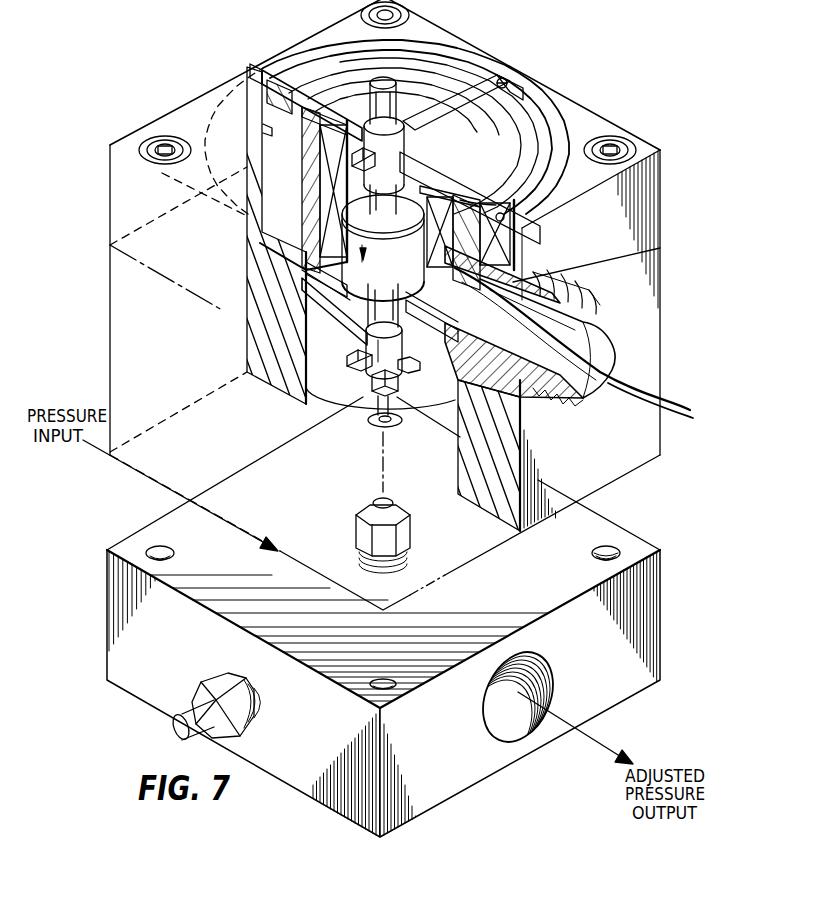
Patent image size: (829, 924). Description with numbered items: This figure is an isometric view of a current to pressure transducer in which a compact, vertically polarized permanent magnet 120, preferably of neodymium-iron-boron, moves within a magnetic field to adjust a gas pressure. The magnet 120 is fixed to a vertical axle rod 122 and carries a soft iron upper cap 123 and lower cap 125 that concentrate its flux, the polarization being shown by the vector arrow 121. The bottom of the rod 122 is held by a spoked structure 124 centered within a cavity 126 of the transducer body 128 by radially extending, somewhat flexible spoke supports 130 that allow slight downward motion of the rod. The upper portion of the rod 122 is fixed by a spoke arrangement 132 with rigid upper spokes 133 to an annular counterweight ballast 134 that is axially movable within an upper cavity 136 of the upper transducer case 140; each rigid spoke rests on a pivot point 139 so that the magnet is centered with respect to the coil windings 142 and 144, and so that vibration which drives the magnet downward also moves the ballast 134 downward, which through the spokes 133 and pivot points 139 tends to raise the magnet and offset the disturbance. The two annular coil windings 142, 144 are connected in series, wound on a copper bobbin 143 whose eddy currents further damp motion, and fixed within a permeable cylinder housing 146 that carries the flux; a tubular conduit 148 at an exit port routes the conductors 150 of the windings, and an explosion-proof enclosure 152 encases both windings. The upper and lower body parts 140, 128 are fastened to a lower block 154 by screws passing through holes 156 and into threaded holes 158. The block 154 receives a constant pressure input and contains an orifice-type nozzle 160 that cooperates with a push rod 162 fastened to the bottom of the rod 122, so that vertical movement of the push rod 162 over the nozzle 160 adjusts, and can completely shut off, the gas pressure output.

The permanent magnet 120 is at (400, 276).
The vector arrow 121 is at (360, 257).
The axle rod 122 is at (366, 92).
The upper cap 123 is at (413, 200).
The spoked structure 124 is at (360, 352).
The lower cap 125 is at (305, 298).
The cavity 126 is at (320, 393).
The transducer body 128 is at (659, 312).
The spoke supports 130 is at (364, 343).
The spoke arrangement 132 is at (421, 112).
The upper spokes 133 is at (293, 63).
The annular counterweight ballast 134 is at (268, 98).
The upper cavity 136 is at (267, 132).
The pivot point 139 is at (504, 78).
The upper transducer case 140 is at (359, 305).
The coil winding 142 is at (320, 173).
The bobbin 143 is at (460, 312).
The coil winding 144 is at (330, 228).
The cylinder housing 146 is at (320, 199).
The tubular conduit 148 is at (613, 347).
The conductors 150 is at (611, 392).
The explosion-proof enclosure 152 is at (463, 137).
The lower block 154 is at (655, 630).
The holes 156 is at (618, 142).
The threaded holes 158 is at (603, 543).
The orifice-type nozzle 160 is at (368, 512).
The push rod 162 is at (397, 413).